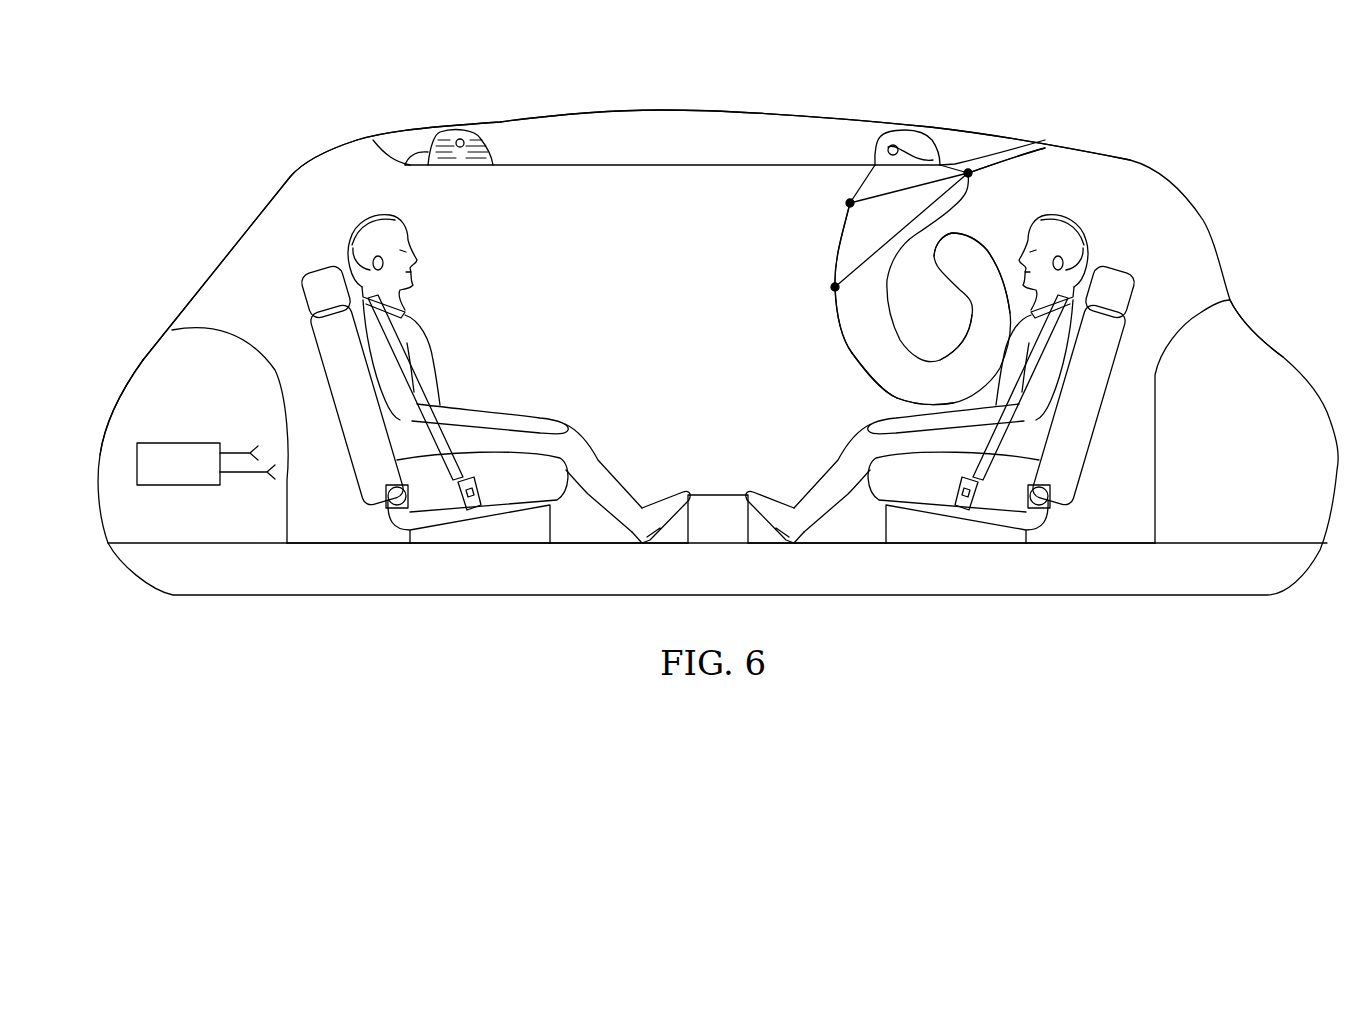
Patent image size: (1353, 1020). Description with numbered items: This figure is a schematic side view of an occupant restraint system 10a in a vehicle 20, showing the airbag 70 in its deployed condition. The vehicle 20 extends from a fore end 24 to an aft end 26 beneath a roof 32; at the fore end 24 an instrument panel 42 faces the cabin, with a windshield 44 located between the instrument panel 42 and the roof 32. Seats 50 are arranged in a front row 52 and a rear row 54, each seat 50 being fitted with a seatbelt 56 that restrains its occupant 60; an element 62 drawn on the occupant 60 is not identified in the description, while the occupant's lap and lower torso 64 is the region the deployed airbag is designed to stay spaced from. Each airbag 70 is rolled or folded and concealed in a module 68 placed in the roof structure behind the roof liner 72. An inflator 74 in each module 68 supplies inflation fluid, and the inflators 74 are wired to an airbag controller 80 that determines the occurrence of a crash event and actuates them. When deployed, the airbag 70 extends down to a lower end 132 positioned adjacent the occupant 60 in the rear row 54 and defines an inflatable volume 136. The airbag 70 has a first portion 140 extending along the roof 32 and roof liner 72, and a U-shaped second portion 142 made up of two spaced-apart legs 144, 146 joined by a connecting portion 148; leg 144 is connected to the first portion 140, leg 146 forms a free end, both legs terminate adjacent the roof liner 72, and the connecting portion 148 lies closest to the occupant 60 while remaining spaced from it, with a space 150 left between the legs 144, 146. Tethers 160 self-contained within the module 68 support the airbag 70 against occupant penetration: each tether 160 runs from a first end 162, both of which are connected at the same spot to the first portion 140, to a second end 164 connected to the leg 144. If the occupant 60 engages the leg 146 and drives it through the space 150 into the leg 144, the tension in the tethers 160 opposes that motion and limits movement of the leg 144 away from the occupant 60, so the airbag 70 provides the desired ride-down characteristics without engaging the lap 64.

The occupant restraint system 10a is at (422, 120).
The vehicle 20 is at (170, 253).
The first or fore end 24 is at (132, 340).
The second or aft end 26 is at (1274, 321).
The roof 32 is at (707, 108).
The instrument panel 42 is at (222, 328).
The windshield 44 is at (268, 210).
The seat 50 is at (373, 428).
The front row 52 is at (467, 552).
The rear row 54 is at (968, 552).
The seatbelt 56 is at (433, 452).
The occupant 60 is at (410, 358).
The head of occupant 62 is at (357, 238).
The lap and lower torso 64 is at (598, 478).
The airbag module 68 is at (500, 150).
The airbag 70 is at (410, 165).
The roof liner 72 is at (730, 167).
The inflator 74 is at (460, 138).
The airbag controller 80 is at (178, 443).
The lower end 132 is at (862, 400).
The inflatable volume 136 is at (878, 372).
The first portion 140 is at (1012, 145).
The second portion 142 is at (853, 313).
The leg 144 is at (857, 340).
The leg 146 is at (973, 317).
The connecting portion 148 is at (960, 397).
The space 150 is at (922, 342).
The tether 160 is at (875, 185).
The first end 162 is at (988, 171).
The second end 164 is at (843, 202).